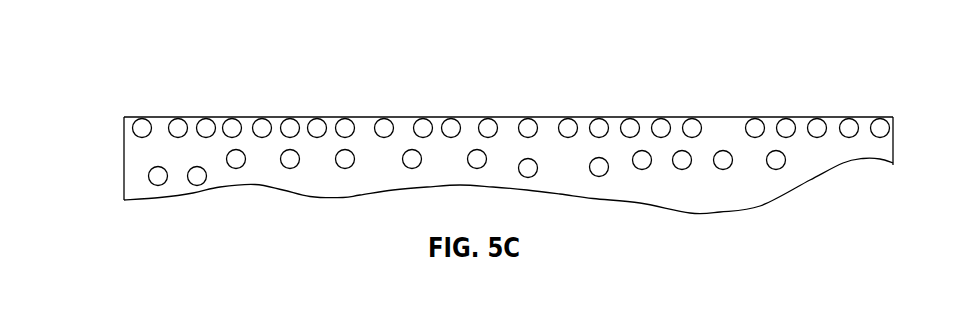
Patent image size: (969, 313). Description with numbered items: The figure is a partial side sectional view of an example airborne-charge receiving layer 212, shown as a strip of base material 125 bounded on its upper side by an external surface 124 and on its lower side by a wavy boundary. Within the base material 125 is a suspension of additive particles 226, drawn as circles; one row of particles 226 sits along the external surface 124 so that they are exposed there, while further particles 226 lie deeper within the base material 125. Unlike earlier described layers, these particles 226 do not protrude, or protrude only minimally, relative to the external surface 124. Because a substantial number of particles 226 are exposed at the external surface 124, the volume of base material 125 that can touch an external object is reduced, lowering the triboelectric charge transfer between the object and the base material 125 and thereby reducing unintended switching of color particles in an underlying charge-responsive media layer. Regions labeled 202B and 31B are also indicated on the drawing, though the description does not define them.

The airborne-charge receiving layer 212 is at (124, 145).
The external surface 124 is at (290, 117).
The top surface layer 202B is at (630, 117).
The edge portion 31B is at (773, 117).
The particles 226 is at (568, 117).
The base material 125 is at (555, 172).